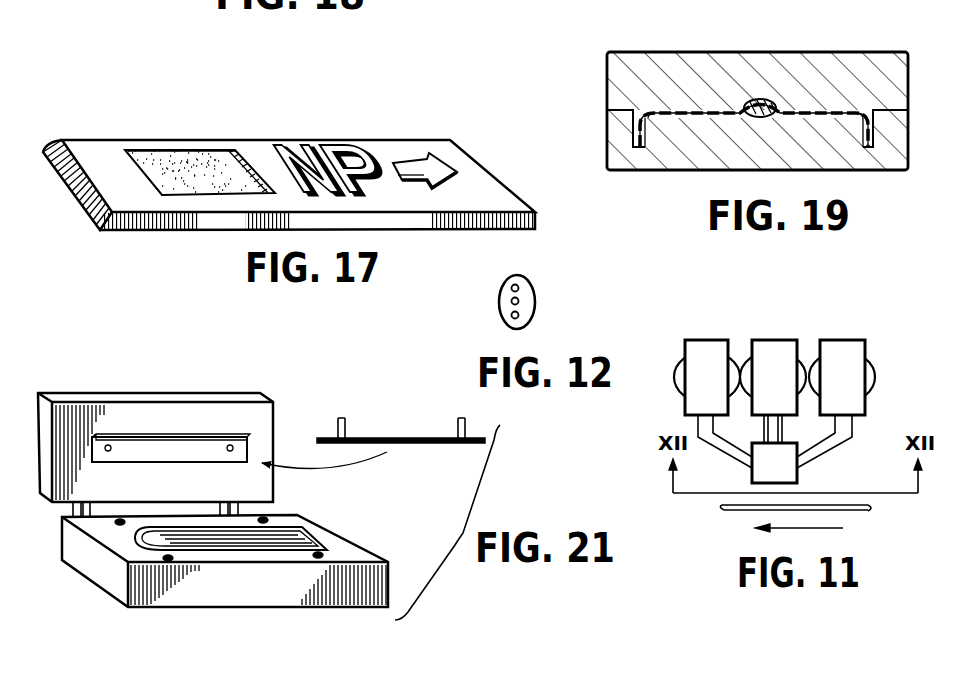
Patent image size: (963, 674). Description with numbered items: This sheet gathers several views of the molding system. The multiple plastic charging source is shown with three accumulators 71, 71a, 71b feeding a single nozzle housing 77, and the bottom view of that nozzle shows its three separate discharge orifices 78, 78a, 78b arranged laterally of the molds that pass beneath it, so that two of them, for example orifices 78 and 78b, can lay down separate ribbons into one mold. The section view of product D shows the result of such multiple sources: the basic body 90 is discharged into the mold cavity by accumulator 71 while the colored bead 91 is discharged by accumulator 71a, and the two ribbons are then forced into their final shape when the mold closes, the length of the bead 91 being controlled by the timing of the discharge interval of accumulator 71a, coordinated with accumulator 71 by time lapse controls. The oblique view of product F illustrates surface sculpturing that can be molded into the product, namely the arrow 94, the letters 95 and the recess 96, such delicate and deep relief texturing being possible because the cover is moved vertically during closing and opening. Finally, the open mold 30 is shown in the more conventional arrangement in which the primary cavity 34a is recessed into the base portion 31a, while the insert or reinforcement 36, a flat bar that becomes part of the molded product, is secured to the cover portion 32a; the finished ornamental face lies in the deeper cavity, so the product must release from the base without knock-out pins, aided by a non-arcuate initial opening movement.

In FIG. 17, the product F is at (398, 141).
In FIG. 17, the recess 96 is at (182, 157).
In FIG. 17, the letters 95 is at (325, 143).
In FIG. 17, the arrow 94 is at (433, 161).
In FIG. 19, the product D is at (690, 107).
In FIG. 19, the colored bead 91 is at (759, 98).
In FIG. 19, the basic body 90 is at (817, 107).
In FIG. 12, the discharge orifice 78 is at (521, 327).
In FIG. 12, the discharge orifice 78a is at (521, 301).
In FIG. 12, the discharge orifice 78b is at (518, 280).
In FIG. 11, the accumulator 71 is at (842, 350).
In FIG. 11, the accumulator 71a is at (770, 350).
In FIG. 11, the accumulator 71b is at (702, 350).
In FIG. 11, the nozzle housing 77 is at (790, 473).
In FIG. 21, the mold 30 is at (279, 418).
In FIG. 21, the insert or reinforcement 36 is at (143, 448).
In FIG. 21, the cover portion 32a is at (277, 487).
In FIG. 21, the base portion 31a is at (357, 543).
In FIG. 21, the cavity 34a is at (271, 550).